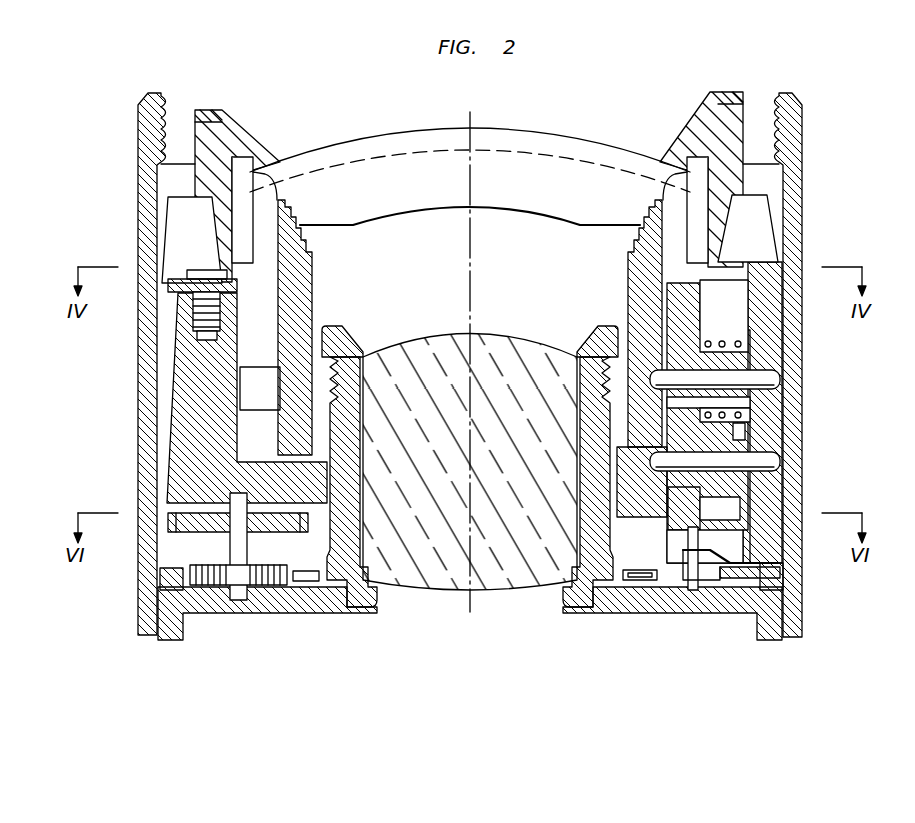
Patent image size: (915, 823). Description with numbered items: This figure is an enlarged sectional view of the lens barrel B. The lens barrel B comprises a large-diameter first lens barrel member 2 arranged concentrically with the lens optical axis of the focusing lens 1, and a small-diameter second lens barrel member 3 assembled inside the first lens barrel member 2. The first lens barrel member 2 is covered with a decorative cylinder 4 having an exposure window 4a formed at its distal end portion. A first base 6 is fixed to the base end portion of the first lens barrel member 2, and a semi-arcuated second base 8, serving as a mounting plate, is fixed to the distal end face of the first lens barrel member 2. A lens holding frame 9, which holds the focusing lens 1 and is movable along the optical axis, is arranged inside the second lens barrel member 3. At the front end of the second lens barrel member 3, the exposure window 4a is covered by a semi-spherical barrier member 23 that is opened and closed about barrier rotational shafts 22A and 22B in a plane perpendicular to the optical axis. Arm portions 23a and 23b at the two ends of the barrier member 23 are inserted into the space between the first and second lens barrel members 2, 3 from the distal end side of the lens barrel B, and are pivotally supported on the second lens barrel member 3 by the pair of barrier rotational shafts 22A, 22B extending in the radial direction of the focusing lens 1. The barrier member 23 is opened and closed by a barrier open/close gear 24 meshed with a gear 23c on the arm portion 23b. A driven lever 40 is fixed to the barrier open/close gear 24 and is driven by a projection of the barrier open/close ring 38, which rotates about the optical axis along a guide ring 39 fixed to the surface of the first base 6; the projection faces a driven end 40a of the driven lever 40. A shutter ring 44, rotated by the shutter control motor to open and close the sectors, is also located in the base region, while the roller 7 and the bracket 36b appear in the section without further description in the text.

The lens barrel B is at (136, 98).
The focusing lens 1 is at (495, 583).
The first lens barrel member 2 is at (200, 378).
The second lens barrel member 3 is at (312, 290).
The decorative cylinder 4 is at (147, 168).
The exposure window 4a is at (677, 132).
The first base 6 is at (275, 600).
The roller 7 is at (203, 272).
The second base 8 is at (200, 297).
The lens holding frame 9 is at (358, 455).
The barrier rotational shaft 22A is at (188, 436).
The barrier rotational shaft 22B is at (765, 378).
The barrier member 23 is at (413, 177).
The arm portion 23a is at (257, 247).
The arm portion 23b is at (683, 232).
The gear 23c is at (690, 413).
The barrier open/close gear 24 is at (720, 437).
The bracket 36b is at (712, 581).
The barrier open/close ring 38 is at (770, 582).
The guide ring 39 is at (160, 582).
The driven lever 40 is at (747, 510).
The driven end 40a is at (695, 591).
The shutter ring 44 is at (305, 586).